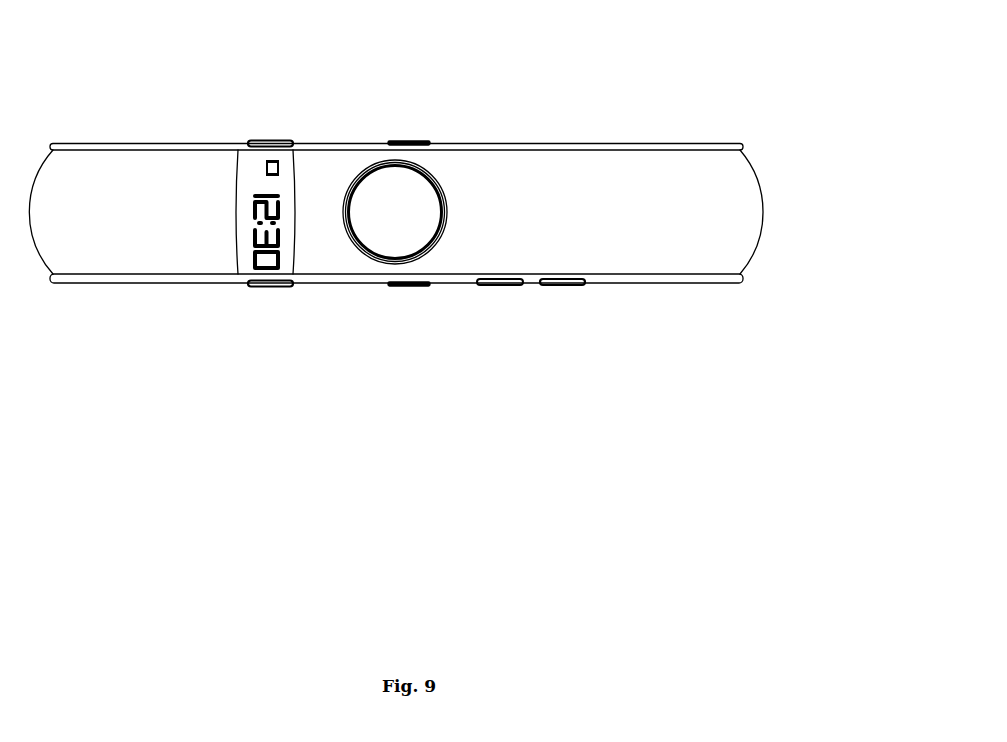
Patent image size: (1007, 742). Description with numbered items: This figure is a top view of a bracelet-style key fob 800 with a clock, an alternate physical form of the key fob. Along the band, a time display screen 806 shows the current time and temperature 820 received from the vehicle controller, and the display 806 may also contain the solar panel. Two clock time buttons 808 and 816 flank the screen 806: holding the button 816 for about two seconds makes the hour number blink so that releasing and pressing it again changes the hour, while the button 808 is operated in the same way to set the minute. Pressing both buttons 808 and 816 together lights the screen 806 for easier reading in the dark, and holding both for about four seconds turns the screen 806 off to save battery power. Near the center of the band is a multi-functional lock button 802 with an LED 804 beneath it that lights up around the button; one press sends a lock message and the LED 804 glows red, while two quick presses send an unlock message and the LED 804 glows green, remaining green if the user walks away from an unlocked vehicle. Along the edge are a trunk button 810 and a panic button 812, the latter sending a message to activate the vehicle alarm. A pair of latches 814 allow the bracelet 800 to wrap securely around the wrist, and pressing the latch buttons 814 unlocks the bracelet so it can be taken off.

The key fob 800 is at (691, 16).
The lock button 802 is at (415, 203).
The LED 804 is at (362, 255).
The time display screen 806 is at (243, 217).
The clock time button 808 is at (262, 286).
The trunk button 810 is at (498, 284).
The panic button 812 is at (562, 284).
The latches 814 is at (410, 141).
The clock time button 816 is at (268, 141).
The current time and temperature 820 is at (250, 165).